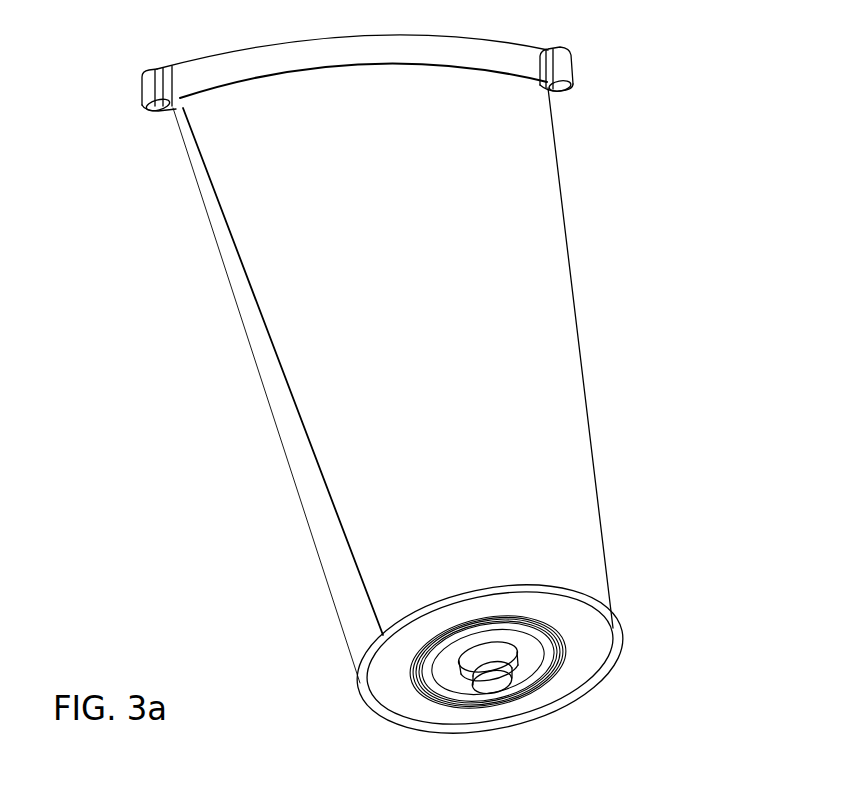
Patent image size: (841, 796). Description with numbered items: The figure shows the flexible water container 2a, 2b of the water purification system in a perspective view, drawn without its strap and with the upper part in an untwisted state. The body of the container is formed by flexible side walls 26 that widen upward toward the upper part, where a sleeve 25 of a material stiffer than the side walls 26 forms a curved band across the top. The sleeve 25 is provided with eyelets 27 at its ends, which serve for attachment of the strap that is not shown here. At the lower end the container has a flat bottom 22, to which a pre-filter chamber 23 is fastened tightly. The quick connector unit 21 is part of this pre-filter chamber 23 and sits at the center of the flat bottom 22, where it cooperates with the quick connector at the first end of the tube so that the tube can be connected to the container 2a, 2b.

The sleeve 25 is at (227, 70).
The eyelets 27 is at (138, 91).
The side walls 26 is at (237, 308).
The flexible water container 2a is at (228, 347).
The flexible water container 2b is at (335, 358).
The flat bottom 22 is at (522, 703).
The pre-filter chamber 23 is at (527, 650).
The quick connector unit 21 is at (505, 685).